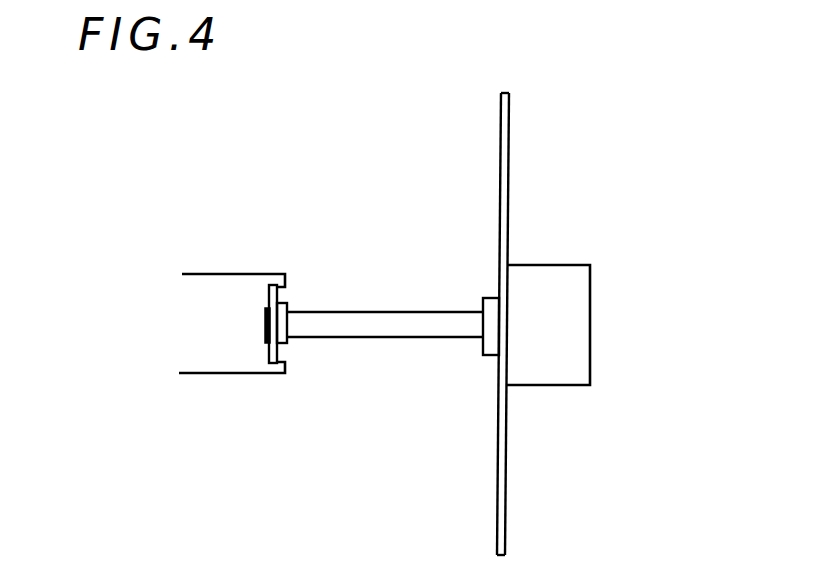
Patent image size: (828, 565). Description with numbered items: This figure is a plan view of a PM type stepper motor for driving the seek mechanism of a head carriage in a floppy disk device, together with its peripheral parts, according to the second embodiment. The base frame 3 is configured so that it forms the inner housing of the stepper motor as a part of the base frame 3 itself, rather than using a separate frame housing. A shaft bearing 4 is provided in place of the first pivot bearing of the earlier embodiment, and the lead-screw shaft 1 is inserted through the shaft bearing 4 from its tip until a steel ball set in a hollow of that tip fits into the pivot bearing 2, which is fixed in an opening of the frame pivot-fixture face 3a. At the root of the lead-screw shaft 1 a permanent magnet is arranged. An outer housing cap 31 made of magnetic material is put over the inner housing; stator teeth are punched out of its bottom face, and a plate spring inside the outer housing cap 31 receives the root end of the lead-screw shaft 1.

The lead-screw shaft 1 is at (358, 331).
The pivot bearing 2 is at (266, 332).
The base frame 3 is at (502, 206).
The frame pivot-fixture face 3a is at (276, 294).
The shaft bearing 4 is at (497, 348).
The outer housing cap 31 is at (569, 288).